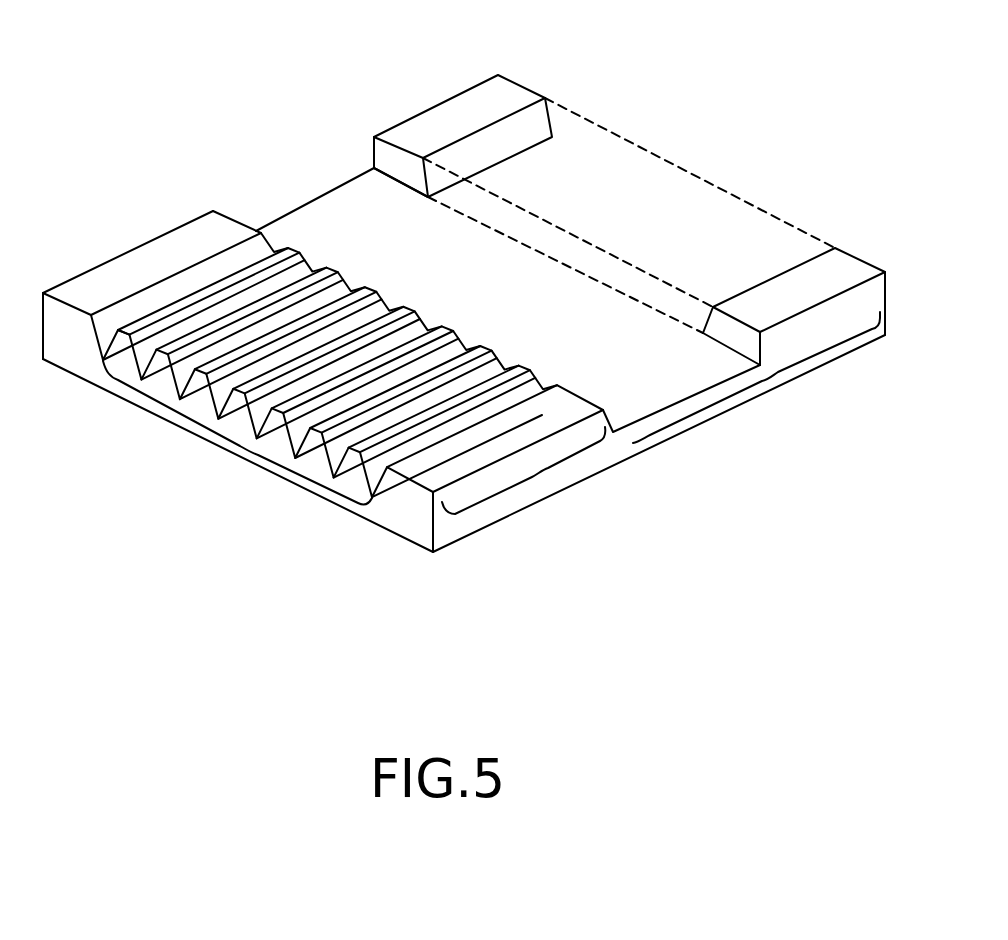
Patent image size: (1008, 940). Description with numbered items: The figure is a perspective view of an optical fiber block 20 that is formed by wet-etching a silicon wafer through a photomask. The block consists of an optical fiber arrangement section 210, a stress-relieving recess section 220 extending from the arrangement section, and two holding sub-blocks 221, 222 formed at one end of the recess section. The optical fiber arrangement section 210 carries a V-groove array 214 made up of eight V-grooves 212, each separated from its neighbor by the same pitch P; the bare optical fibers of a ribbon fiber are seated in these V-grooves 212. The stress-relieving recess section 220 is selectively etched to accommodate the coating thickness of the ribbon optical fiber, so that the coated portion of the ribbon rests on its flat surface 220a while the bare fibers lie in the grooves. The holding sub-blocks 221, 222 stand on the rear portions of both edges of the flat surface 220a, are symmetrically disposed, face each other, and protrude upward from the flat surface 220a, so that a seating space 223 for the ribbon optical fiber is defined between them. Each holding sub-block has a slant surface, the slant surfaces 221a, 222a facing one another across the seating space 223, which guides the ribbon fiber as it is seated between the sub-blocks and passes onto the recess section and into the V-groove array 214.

The optical fiber block 20 is at (336, 43).
The optical fiber arrangement section 210 is at (324, 379).
The V-grooves 212 is at (170, 381).
The V-groove array 214 is at (243, 448).
The pitch P is at (130, 334).
The stress-relieving recess section 220 is at (773, 380).
The flat surface 220a is at (310, 233).
The holding sub-block 221 is at (527, 115).
The slant surface 221a is at (538, 125).
The holding sub-block 222 is at (801, 268).
The slant surface 222a is at (702, 333).
The seating space 223 is at (692, 173).